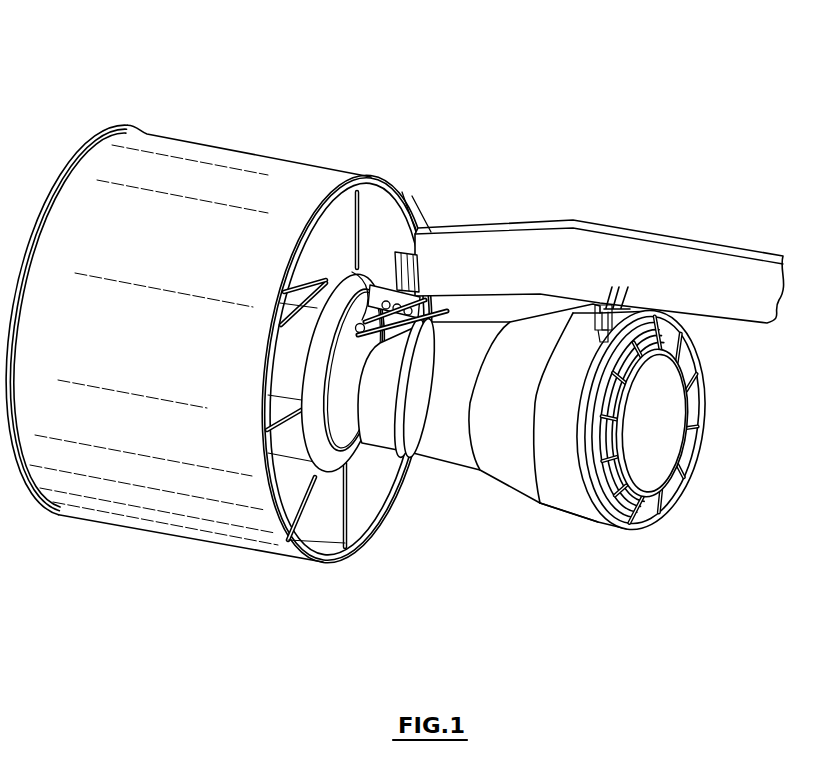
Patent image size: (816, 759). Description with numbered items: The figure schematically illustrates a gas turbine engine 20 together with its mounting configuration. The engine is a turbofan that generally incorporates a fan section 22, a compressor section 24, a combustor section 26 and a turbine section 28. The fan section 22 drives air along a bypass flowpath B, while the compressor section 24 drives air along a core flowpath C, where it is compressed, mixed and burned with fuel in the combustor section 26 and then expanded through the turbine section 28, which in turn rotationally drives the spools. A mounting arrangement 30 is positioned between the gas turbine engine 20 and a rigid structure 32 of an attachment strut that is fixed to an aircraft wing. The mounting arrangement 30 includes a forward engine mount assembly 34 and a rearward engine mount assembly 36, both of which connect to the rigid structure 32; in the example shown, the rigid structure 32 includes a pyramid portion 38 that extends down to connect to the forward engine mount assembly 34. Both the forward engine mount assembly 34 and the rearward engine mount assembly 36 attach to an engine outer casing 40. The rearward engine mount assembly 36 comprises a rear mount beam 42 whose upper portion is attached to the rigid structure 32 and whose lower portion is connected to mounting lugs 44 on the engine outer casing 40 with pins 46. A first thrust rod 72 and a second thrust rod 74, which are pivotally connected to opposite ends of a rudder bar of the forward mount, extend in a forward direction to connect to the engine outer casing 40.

The gas turbine engine 20 is at (624, 90).
The fan section 22 is at (358, 170).
The compressor section 24 is at (385, 455).
The combustor section 26 is at (501, 500).
The turbine section 28 is at (570, 533).
The mounting arrangement 30 is at (592, 296).
The rigid structure 32 is at (683, 241).
The forward engine mount assembly 34 is at (375, 266).
The rearward engine mount assembly 36 is at (641, 293).
The pyramid portion 38 is at (417, 258).
The engine outer casing 40 is at (442, 455).
The rear mount beam 42 is at (687, 350).
The mounting lugs 44 is at (602, 328).
The pins 46 is at (620, 353).
The first thrust rod 72 is at (450, 312).
The second thrust rod 74 is at (416, 406).
The bypass flowpath B is at (385, 203).
The core flowpath C is at (645, 432).